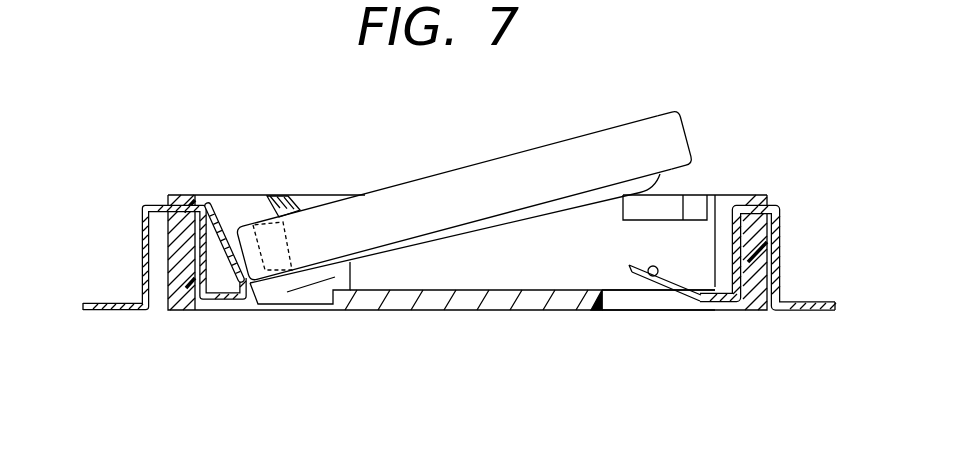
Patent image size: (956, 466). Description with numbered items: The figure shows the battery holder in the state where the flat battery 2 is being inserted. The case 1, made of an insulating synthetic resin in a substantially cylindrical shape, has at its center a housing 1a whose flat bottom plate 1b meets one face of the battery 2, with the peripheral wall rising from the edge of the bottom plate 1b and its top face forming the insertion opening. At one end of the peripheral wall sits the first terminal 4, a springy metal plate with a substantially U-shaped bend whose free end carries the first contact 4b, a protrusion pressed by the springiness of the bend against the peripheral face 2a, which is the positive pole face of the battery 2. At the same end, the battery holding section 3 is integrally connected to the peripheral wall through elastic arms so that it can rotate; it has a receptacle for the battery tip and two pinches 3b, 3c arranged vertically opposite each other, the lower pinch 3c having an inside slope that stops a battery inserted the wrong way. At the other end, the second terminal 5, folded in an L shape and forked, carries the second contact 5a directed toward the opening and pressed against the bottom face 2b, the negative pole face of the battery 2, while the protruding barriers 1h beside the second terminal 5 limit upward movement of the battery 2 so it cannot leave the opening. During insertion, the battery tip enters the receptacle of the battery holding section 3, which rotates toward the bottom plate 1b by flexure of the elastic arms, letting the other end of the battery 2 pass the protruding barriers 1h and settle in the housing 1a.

The case 1 is at (382, 311).
The housing 1a is at (570, 268).
The bottom plate 1b is at (483, 305).
The protruding barriers 1h is at (694, 201).
The flat battery 2 is at (626, 118).
The peripheral face 2a is at (678, 137).
The bottom face 2b is at (546, 223).
The battery holding section 3 is at (256, 308).
The pinch 3b is at (293, 200).
The pinch 3c is at (303, 304).
The first terminal 4 is at (136, 250).
The first contact 4b is at (229, 246).
The second terminal 5 is at (788, 247).
The second contact 5a is at (653, 278).